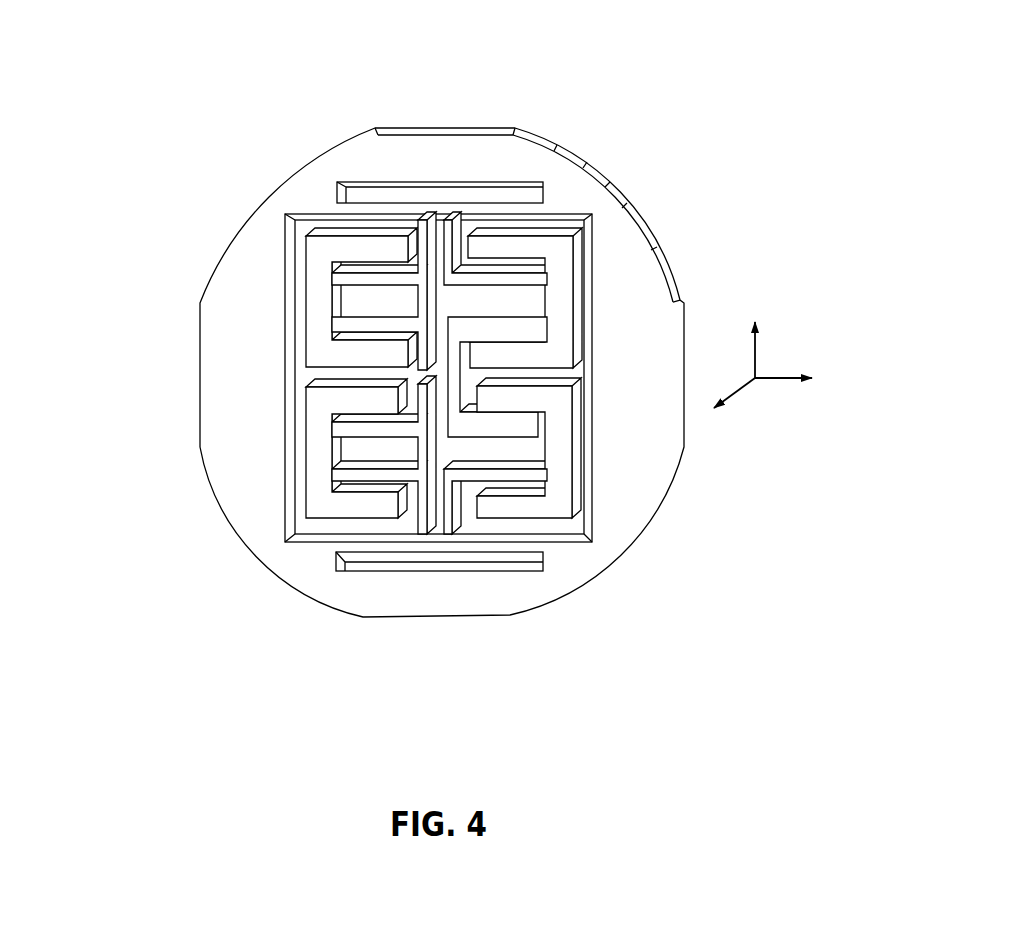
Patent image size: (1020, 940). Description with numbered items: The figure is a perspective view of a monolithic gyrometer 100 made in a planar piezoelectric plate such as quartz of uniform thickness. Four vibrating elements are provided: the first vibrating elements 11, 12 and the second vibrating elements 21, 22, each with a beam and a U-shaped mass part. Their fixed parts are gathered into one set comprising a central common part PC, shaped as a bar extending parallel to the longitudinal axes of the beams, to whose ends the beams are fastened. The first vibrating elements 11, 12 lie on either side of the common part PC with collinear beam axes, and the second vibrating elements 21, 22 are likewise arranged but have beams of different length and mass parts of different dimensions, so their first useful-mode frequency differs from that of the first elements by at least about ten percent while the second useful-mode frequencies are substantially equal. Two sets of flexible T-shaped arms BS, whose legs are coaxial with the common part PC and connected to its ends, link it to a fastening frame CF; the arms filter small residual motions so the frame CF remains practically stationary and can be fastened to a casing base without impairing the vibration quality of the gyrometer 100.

The monolithic gyrometer 100 is at (462, 373).
The first vibrating element 11 is at (295, 227).
The first vibrating element 12 is at (588, 228).
The second vibrating element 21 is at (293, 513).
The second vibrating element 22 is at (583, 517).
The flexible T-shaped arms BS is at (450, 242).
The fastening frame CF is at (218, 352).
The central common part PC is at (438, 368).